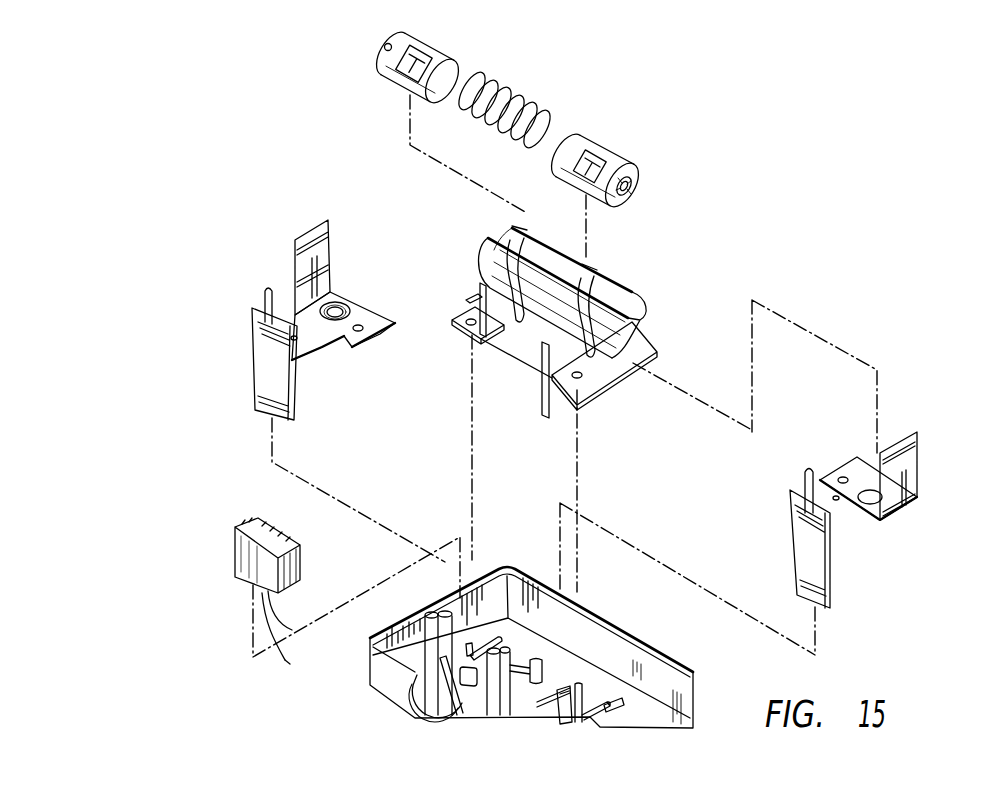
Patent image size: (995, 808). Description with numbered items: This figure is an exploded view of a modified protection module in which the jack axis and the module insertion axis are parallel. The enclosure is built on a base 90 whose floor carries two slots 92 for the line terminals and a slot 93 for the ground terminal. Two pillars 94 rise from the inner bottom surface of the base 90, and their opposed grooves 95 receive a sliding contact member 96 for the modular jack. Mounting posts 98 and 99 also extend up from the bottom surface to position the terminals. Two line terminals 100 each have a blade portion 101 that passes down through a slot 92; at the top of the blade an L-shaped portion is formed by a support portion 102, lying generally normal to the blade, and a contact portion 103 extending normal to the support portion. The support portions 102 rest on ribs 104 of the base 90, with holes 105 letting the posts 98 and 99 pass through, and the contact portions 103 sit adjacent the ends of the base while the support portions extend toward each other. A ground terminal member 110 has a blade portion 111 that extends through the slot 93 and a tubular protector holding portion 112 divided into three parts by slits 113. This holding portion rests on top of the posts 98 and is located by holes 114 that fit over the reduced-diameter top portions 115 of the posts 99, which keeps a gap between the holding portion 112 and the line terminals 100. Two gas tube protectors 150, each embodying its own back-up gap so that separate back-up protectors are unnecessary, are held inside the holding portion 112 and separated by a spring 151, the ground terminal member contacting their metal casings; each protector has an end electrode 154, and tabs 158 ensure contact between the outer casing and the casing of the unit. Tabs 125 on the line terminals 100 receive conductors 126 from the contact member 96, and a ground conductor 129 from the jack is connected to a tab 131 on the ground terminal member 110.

The base 90 is at (536, 660).
The slots 92 is at (460, 720).
The slot 93 is at (554, 716).
The pillars 94 is at (440, 660).
The grooves 95 is at (435, 615).
The contact member 96 is at (279, 531).
The mounting posts 98 is at (542, 665).
The mounting posts 99 is at (493, 718).
The line terminals 100 is at (563, 433).
The blade portion 101 is at (295, 407).
The support portion 102 is at (361, 305).
The contact portion 103 is at (295, 253).
The ribs 104 is at (505, 612).
The holes 105 is at (364, 330).
The ground terminal member 110 is at (542, 327).
The blade portion 111 is at (542, 405).
The protector holding portion 112 is at (533, 315).
The slits 113 is at (543, 242).
The holes 114 is at (470, 338).
The top portions 115 is at (466, 718).
The tabs 125 is at (265, 294).
The conductors 126 is at (287, 617).
The conductor 129 is at (284, 645).
The tab 131 is at (466, 300).
The protectors 150 is at (430, 52).
The spring 151 is at (507, 90).
The electrode 154 is at (386, 47).
The tabs 158 is at (398, 64).